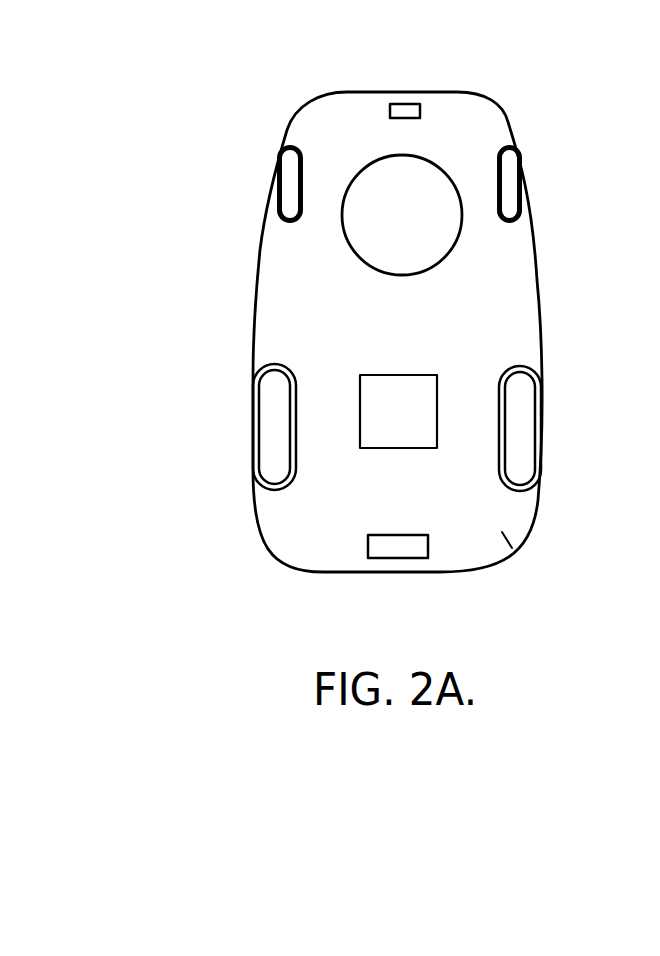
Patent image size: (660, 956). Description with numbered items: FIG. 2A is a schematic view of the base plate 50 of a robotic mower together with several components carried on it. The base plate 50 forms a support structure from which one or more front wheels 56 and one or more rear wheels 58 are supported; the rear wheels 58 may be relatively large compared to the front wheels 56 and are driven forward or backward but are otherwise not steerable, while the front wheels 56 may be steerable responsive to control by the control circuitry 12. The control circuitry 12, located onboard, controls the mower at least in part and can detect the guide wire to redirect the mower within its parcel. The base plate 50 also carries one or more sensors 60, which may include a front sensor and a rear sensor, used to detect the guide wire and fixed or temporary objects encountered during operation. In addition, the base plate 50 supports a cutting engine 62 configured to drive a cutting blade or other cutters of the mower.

The control circuitry 12 is at (392, 403).
The base plate 50 is at (293, 322).
The front wheels 56 is at (288, 172).
The rear wheels 58 is at (280, 420).
The sensors 60 is at (393, 107).
The cutting engine 62 is at (400, 184).